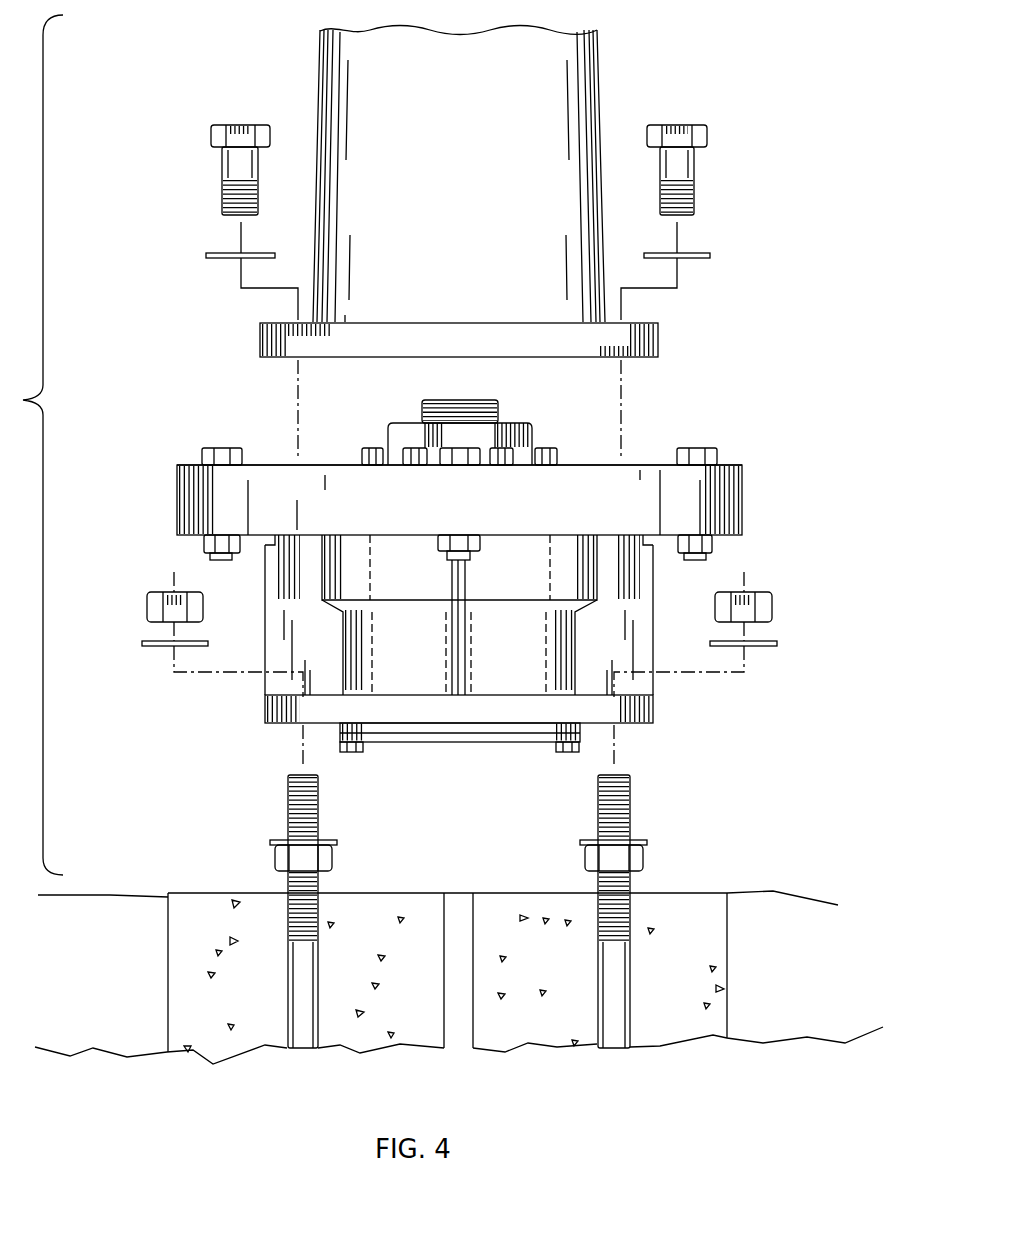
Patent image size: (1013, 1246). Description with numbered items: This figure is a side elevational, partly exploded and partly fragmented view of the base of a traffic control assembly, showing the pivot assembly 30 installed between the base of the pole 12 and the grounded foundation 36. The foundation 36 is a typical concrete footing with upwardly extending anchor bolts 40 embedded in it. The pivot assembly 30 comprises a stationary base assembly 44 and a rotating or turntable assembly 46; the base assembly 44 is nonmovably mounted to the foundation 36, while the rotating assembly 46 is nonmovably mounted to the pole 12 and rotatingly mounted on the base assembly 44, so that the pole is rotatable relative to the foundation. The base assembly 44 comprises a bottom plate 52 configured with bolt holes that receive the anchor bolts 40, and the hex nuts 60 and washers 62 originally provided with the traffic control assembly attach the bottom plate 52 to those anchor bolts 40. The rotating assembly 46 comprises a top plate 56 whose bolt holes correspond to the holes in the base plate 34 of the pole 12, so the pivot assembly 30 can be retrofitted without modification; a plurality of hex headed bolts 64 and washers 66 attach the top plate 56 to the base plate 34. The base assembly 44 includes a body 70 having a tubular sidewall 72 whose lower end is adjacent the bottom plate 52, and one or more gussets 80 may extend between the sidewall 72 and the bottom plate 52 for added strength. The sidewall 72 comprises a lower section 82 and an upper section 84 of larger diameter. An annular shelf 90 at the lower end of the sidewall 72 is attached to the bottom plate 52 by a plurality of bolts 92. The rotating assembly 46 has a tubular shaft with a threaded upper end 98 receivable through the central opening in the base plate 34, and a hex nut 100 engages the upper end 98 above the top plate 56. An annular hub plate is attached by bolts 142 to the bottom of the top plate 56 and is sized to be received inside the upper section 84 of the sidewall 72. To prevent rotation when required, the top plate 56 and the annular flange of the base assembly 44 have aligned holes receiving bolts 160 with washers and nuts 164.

The pole 12 is at (578, 78).
The pivot assembly 30 is at (745, 500).
The base plate 34 is at (658, 345).
The foundation 36 is at (415, 893).
The anchor bolts 40 is at (288, 805).
The base assembly 44 is at (655, 712).
The rotating assembly 46 is at (177, 483).
The bottom plate 52 is at (290, 710).
The top plate 56 is at (652, 465).
The hex nuts 60 is at (772, 600).
The washers 62 is at (777, 643).
The hex headed bolts 64 is at (710, 137).
The washers 66 is at (710, 256).
The body 70 is at (265, 612).
The tubular sidewall 72 is at (540, 655).
The gussets 80 is at (625, 597).
The lower section 82 is at (373, 634).
The upper section 84 is at (343, 568).
The annular shelf 90 is at (452, 742).
The bolts 92 is at (350, 752).
The threaded upper end 98 is at (420, 408).
The hex nut 100 is at (521, 437).
The bolts 142 is at (362, 452).
The bolts 160 is at (222, 450).
The nuts 164 is at (204, 543).